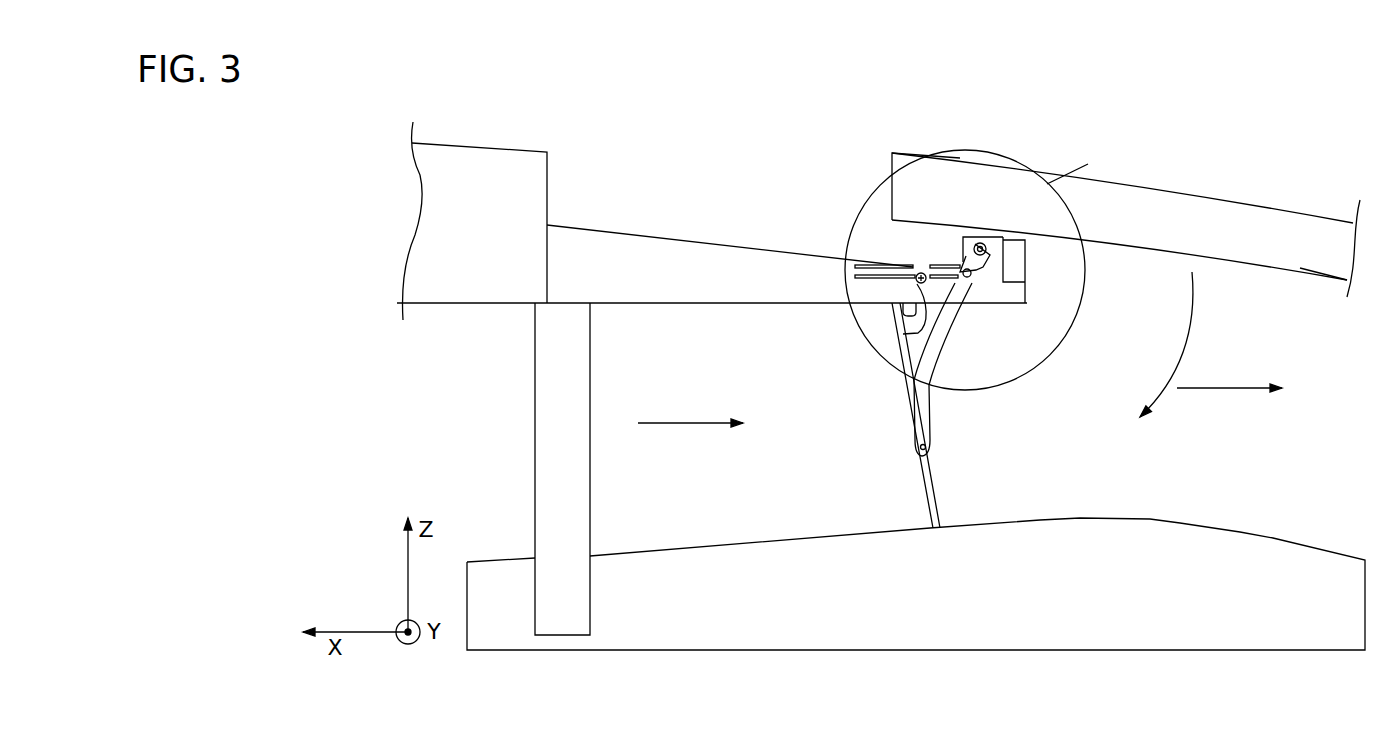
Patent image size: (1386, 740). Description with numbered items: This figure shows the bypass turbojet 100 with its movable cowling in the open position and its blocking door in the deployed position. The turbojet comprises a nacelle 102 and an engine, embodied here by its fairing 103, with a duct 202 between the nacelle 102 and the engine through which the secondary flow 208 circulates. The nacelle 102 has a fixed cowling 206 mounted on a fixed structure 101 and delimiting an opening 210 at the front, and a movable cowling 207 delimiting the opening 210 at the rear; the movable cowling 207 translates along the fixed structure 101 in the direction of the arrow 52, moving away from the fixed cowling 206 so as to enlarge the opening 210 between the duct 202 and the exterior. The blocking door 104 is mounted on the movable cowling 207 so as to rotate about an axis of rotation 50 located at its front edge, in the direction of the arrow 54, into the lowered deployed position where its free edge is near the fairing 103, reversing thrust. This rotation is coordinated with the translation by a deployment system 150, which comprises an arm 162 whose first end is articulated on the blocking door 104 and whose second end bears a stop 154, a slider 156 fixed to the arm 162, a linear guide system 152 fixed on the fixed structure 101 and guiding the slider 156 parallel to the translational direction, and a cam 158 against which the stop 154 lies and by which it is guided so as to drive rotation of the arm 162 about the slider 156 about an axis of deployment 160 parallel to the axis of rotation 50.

The axis of rotation 50 is at (918, 275).
The arrow 52 is at (1229, 374).
The arrow 54 is at (1166, 359).
The bypass turbojet 100 is at (1262, 162).
The fixed structure 101 is at (572, 424).
The nacelle 102 is at (917, 108).
The fairing 103 is at (1273, 538).
The blocking door 104 is at (922, 483).
The deployment system 150 is at (1038, 142).
The linear guide system 152 is at (867, 277).
The stop 154 is at (1025, 280).
The slider 156 is at (970, 279).
The cam 158 is at (997, 248).
The axis of deployment 160 is at (957, 290).
The arm 162 is at (935, 425).
The duct 202 is at (733, 486).
The fixed cowling 206 is at (507, 163).
The movable cowling 207 is at (1310, 268).
The secondary flow 208 is at (690, 410).
The opening 210 is at (710, 155).